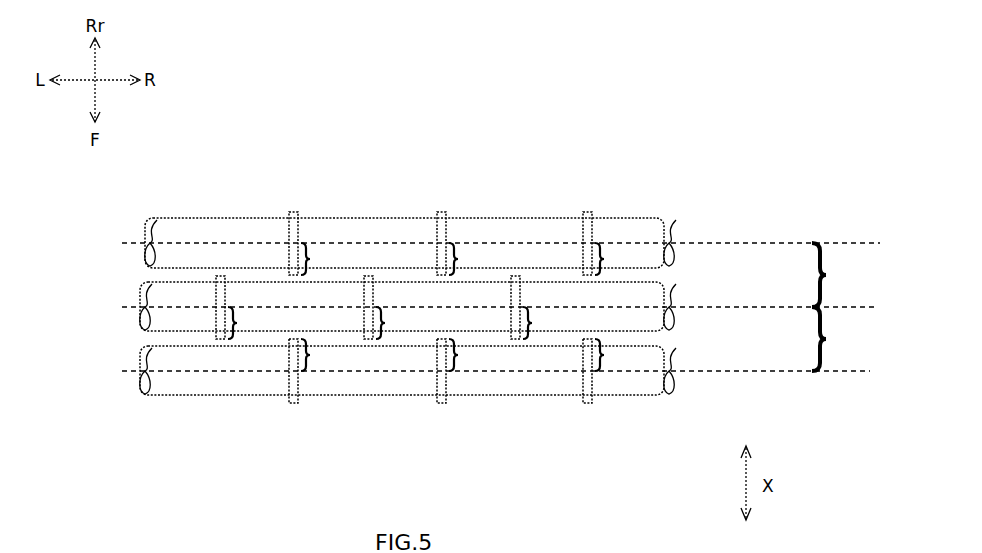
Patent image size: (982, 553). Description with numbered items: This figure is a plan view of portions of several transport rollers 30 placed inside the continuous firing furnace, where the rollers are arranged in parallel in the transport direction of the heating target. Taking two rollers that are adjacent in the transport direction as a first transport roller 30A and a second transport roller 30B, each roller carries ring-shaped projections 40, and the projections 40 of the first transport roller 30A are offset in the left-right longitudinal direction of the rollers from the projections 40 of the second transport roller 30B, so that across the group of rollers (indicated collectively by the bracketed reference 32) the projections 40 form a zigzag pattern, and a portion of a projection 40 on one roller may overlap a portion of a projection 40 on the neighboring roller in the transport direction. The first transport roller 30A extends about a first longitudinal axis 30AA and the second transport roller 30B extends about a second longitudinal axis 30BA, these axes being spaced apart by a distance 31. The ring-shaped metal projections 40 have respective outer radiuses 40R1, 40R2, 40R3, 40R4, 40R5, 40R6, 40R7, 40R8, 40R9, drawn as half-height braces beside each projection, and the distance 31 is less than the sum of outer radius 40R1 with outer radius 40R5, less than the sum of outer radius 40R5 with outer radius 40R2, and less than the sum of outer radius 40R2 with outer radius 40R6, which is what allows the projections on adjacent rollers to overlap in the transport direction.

The transport roller 30 is at (448, 319).
The first transport roller 30A is at (648, 271).
The second transport roller 30B is at (648, 335).
The first longitudinal axis 30AA is at (527, 308).
The second longitudinal axis 30BA is at (523, 308).
The distance 31 is at (832, 307).
The pipe bundle 32 is at (147, 232).
The ring-shaped projection 40 is at (220, 276).
The outer radius 40R1 is at (326, 355).
The outer radius 40R2 is at (474, 355).
The outer radius 40R3 is at (620, 355).
The outer radius 40R4 is at (253, 323).
The outer radius 40R5 is at (401, 323).
The outer radius 40R6 is at (548, 323).
The outer radius 40R7 is at (326, 259).
The outer radius 40R8 is at (474, 259).
The outer radius 40R9 is at (620, 259).